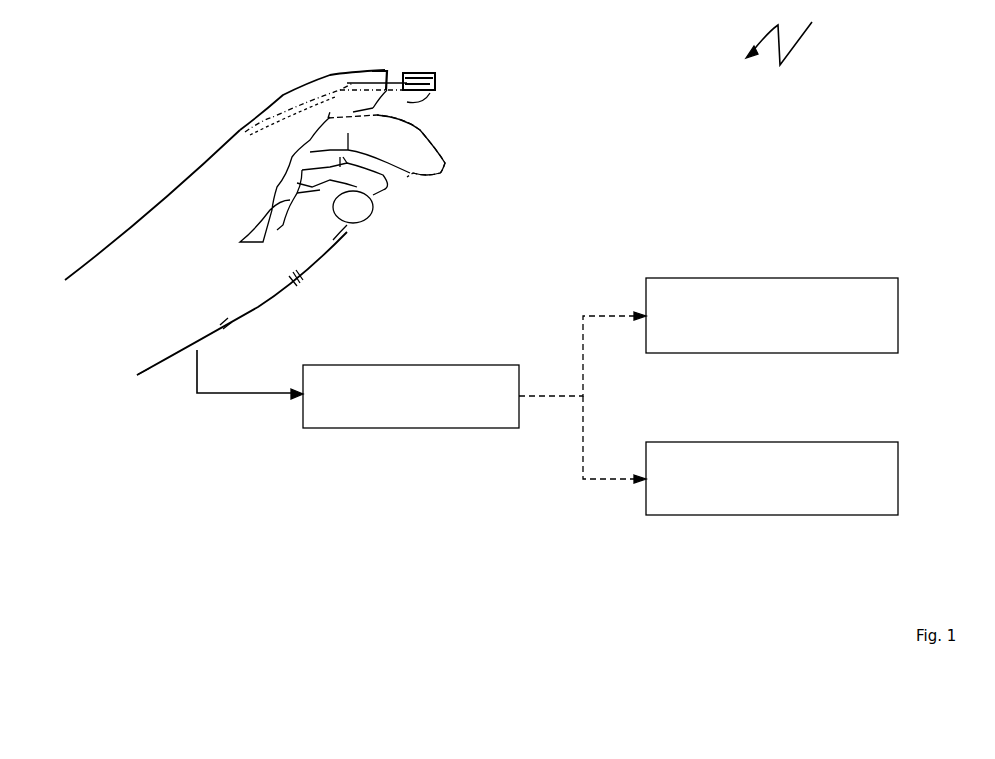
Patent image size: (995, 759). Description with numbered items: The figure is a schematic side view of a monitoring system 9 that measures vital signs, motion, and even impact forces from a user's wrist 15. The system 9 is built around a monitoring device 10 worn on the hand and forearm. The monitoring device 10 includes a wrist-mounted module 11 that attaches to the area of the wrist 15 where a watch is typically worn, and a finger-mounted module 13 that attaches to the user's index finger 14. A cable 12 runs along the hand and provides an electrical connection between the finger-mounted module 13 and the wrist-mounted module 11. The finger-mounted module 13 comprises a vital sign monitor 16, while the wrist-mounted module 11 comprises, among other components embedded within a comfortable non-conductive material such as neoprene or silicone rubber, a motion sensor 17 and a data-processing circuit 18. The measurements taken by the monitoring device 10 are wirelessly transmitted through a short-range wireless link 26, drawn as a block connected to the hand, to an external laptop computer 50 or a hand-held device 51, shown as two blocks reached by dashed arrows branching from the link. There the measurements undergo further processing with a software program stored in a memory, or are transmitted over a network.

The monitoring system 9 is at (788, 39).
The monitoring device 10 is at (115, 313).
The wrist-mounted module 11 is at (98, 252).
The cable 12 is at (212, 133).
The finger-mounted module 13 is at (395, 65).
The index finger 14 is at (427, 102).
The wrist 15 is at (140, 373).
The vital sign monitor 16 is at (128, 280).
The motion sensor 17 is at (175, 342).
The data-processing circuit 18 is at (165, 295).
The short-range wireless link 26 is at (408, 365).
The laptop computer 50 is at (770, 278).
The hand-held device 51 is at (765, 515).